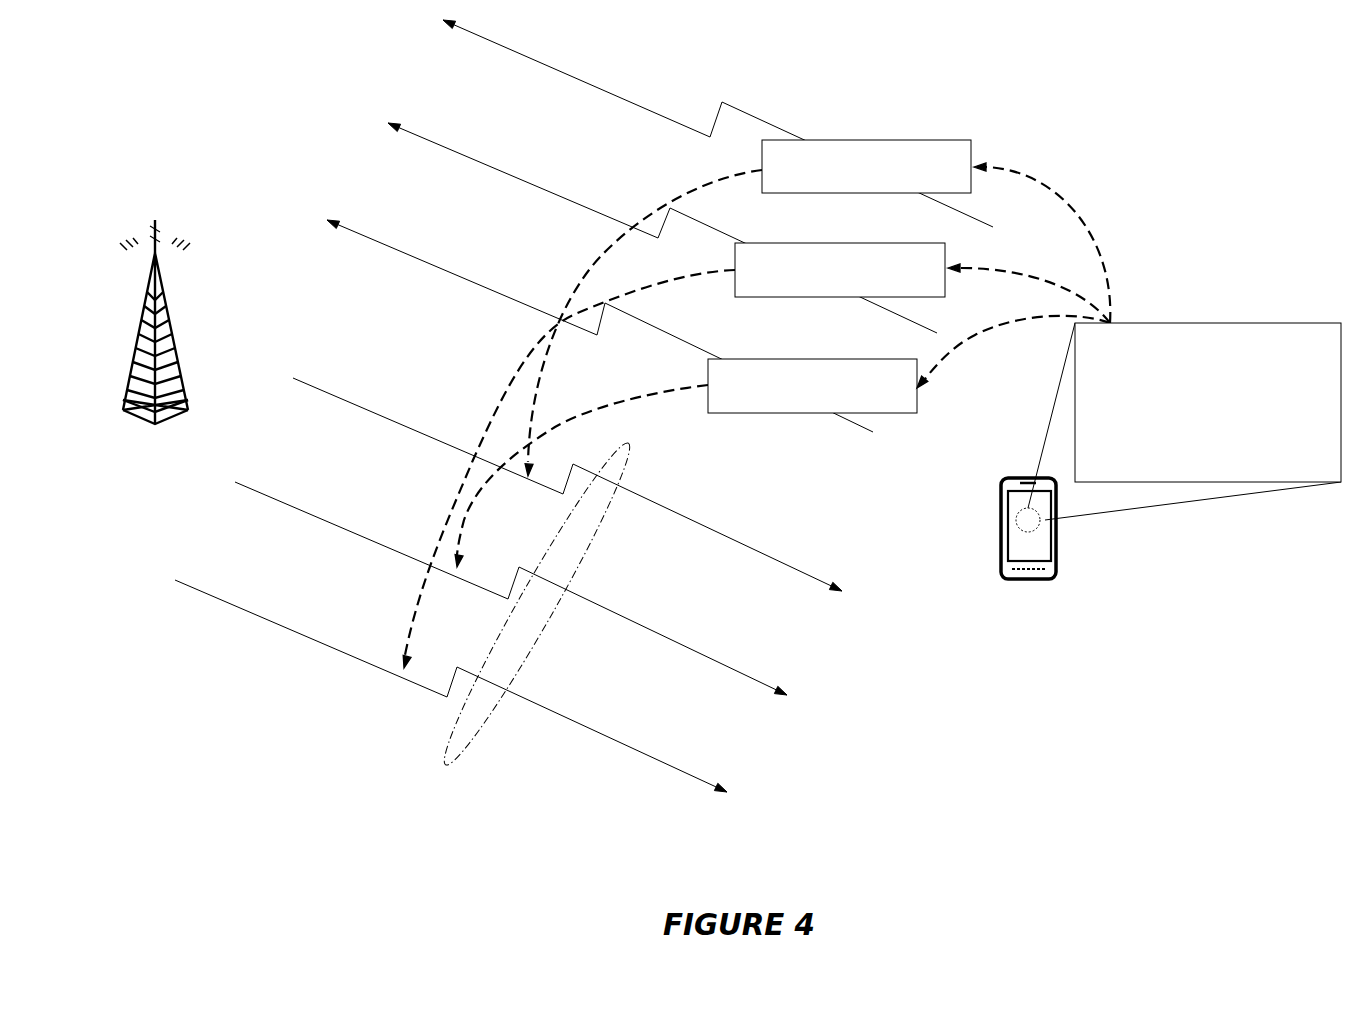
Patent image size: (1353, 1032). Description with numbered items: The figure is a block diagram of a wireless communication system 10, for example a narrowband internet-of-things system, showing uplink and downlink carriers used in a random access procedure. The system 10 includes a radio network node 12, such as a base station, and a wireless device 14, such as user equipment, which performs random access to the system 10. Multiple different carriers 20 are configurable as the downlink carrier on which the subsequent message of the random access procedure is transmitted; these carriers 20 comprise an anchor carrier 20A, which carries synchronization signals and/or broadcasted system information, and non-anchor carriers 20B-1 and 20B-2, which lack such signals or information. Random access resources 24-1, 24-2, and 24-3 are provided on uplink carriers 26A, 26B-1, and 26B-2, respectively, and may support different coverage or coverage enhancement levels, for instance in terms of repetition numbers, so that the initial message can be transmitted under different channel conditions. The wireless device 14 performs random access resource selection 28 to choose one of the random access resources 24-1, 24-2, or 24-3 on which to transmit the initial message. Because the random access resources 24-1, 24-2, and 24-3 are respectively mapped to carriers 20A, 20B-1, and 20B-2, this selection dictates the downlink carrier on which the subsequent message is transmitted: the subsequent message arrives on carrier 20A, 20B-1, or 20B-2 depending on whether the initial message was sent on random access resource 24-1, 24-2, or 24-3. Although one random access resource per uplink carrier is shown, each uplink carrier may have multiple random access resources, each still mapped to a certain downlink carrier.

The wireless communication system 10 is at (152, 160).
The radio network node 12 is at (123, 410).
The wireless device 14 is at (1058, 558).
The carriers 20 is at (445, 765).
The anchor carrier 20A is at (350, 403).
The non-anchor carrier 20B-1 is at (330, 522).
The non-anchor carrier 20B-2 is at (266, 620).
The random access resource 24-1 is at (748, 308).
The random access resource 24-2 is at (674, 455).
The random access resource 24-3 is at (686, 463).
The uplink carrier 26A is at (500, 42).
The uplink carrier 26B-1 is at (478, 160).
The uplink carrier 26B-2 is at (420, 260).
The random access resource selection 28 is at (1129, 341).